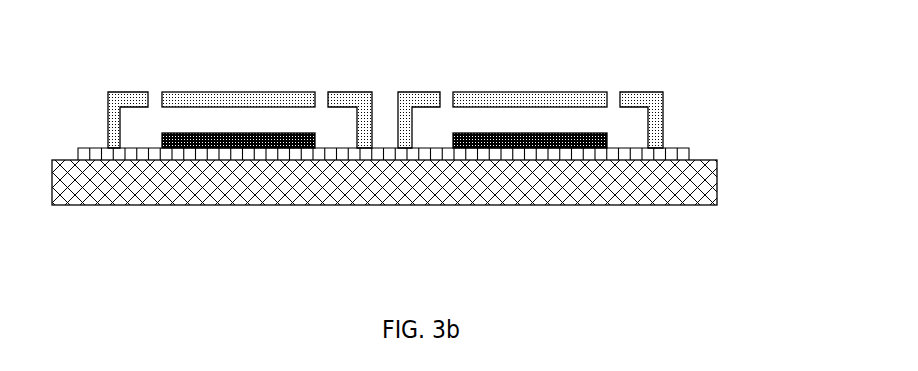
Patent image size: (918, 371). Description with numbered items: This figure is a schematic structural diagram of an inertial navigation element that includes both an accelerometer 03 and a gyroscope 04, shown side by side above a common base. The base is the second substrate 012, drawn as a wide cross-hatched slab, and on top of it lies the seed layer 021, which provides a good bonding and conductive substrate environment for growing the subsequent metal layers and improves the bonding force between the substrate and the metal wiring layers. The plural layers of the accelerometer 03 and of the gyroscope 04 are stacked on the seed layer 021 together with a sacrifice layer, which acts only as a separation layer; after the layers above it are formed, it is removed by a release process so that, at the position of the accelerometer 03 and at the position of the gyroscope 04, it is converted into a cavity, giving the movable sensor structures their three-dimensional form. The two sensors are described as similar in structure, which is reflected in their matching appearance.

The accelerometer 03 is at (355, 99).
The gyroscope 04 is at (645, 99).
The seed layer 021 is at (675, 155).
The second substrate 012 is at (343, 200).